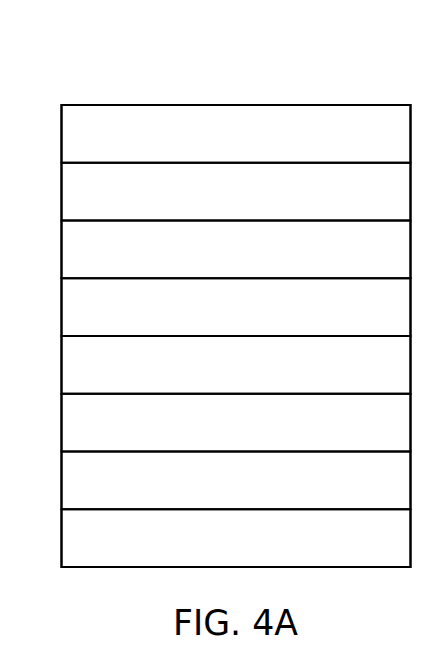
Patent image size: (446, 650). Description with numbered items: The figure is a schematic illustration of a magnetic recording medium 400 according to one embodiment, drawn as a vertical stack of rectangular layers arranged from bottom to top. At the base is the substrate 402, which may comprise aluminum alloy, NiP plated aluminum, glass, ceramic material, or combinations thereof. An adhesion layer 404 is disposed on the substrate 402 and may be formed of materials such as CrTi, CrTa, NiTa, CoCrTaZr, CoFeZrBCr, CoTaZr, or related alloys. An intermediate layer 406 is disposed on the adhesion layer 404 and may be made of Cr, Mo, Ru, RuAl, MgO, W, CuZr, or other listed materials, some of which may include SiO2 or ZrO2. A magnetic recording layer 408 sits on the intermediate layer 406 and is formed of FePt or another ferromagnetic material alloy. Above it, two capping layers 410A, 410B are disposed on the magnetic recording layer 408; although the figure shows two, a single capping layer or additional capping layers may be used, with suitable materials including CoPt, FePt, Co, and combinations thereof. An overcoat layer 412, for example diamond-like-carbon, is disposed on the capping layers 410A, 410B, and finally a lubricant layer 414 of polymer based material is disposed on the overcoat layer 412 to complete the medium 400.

The magnetic recording medium 400 is at (126, 62).
The substrate 402 is at (216, 551).
The adhesion layer 404 is at (216, 494).
The intermediate layer 406 is at (216, 436).
The magnetic recording layer 408 is at (216, 378).
The capping layer 410A is at (210, 320).
The capping layer 410B is at (210, 262).
The overcoat layer 412 is at (216, 205).
The lubricant layer 414 is at (216, 147).